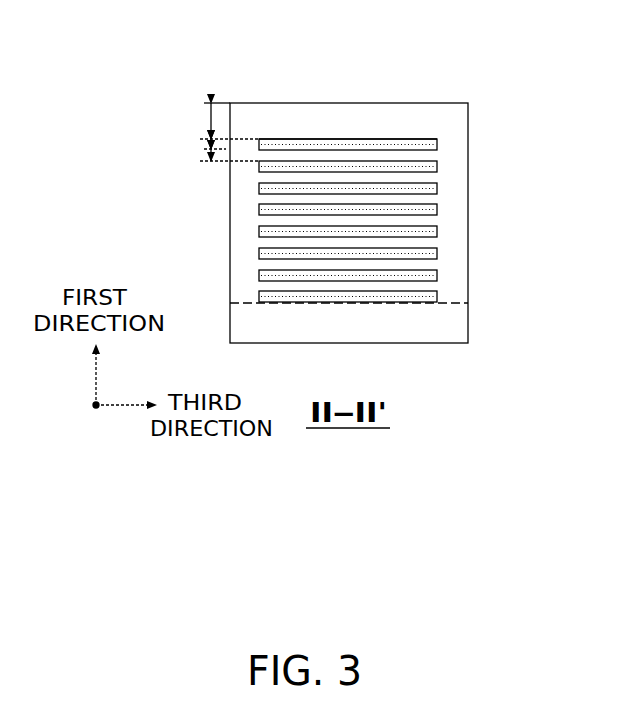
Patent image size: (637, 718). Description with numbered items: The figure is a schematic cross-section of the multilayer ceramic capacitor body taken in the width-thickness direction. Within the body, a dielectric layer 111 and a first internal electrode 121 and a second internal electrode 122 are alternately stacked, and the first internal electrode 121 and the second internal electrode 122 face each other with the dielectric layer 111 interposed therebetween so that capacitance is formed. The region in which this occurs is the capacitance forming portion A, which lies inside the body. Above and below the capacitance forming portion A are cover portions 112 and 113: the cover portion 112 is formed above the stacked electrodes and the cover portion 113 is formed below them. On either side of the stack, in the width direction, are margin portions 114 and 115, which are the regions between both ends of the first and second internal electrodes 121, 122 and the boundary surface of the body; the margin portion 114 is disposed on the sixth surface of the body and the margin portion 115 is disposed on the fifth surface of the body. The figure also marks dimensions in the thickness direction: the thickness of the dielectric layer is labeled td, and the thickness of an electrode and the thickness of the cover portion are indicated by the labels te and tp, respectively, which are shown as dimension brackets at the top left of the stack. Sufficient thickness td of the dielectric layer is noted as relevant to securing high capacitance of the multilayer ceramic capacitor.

The cover portion 112 is at (355, 120).
The cover portion 113 is at (460, 324).
The margin portion 115 is at (460, 249).
The dielectric layer 111 is at (437, 148).
The first internal electrode 121 is at (437, 138).
The second internal electrode 122 is at (437, 162).
The margin portion 114 is at (245, 266).
The capacitance forming portion A is at (248, 226).
The thickness tp is at (207, 121).
The electrode thickness te is at (204, 141).
The thickness of the dielectric layer td is at (209, 154).